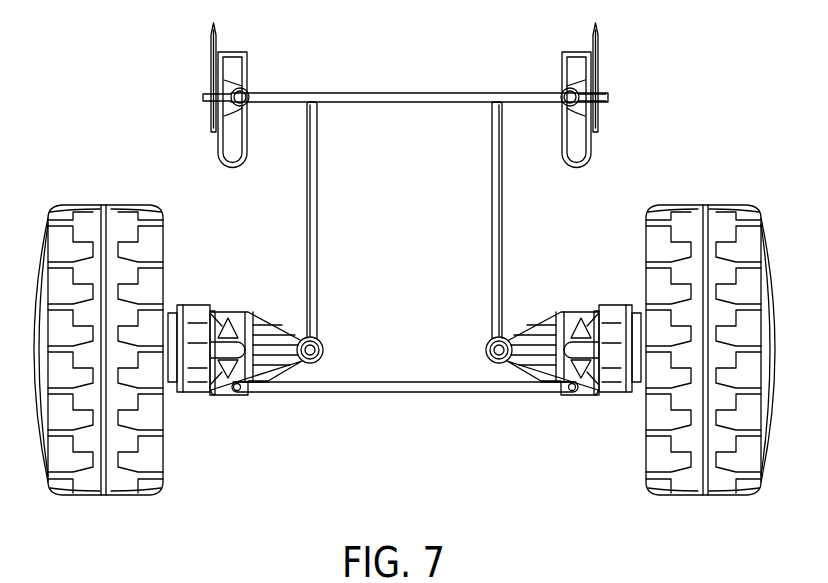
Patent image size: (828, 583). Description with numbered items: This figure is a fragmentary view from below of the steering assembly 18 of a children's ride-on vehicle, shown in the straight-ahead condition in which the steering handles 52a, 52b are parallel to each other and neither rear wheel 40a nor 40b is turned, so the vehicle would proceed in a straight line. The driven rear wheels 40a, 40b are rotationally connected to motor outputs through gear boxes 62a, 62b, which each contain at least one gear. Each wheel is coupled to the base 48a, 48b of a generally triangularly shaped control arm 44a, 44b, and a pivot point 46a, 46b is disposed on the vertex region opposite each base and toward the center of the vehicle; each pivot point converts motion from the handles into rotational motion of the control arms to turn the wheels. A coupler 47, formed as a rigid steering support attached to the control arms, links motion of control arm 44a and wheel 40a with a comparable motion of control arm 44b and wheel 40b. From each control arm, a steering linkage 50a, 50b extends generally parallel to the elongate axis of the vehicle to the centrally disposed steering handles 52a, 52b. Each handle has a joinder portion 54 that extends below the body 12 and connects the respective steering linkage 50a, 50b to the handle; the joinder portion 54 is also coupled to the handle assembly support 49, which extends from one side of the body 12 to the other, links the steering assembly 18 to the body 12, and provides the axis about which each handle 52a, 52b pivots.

The body 12 is at (598, 44).
The steering assembly 18 is at (320, 53).
The rear wheel 40a is at (661, 234).
The rear wheel 40b is at (60, 234).
The control arm 44a is at (572, 312).
The control arm 44b is at (237, 312).
The pivot point 46a is at (486, 343).
The pivot point 46b is at (324, 343).
The coupler 47 is at (363, 396).
The base 48a is at (592, 310).
The base 48b is at (215, 310).
The handle assembly support 49 is at (384, 92).
The steering linkage 50a is at (506, 225).
The steering linkage 50b is at (306, 223).
The steering handle 52a is at (593, 71).
The steering handle 52b is at (230, 82).
The joinder portion 54 is at (248, 90).
The gear box 62a is at (613, 388).
The gear box 62b is at (195, 388).